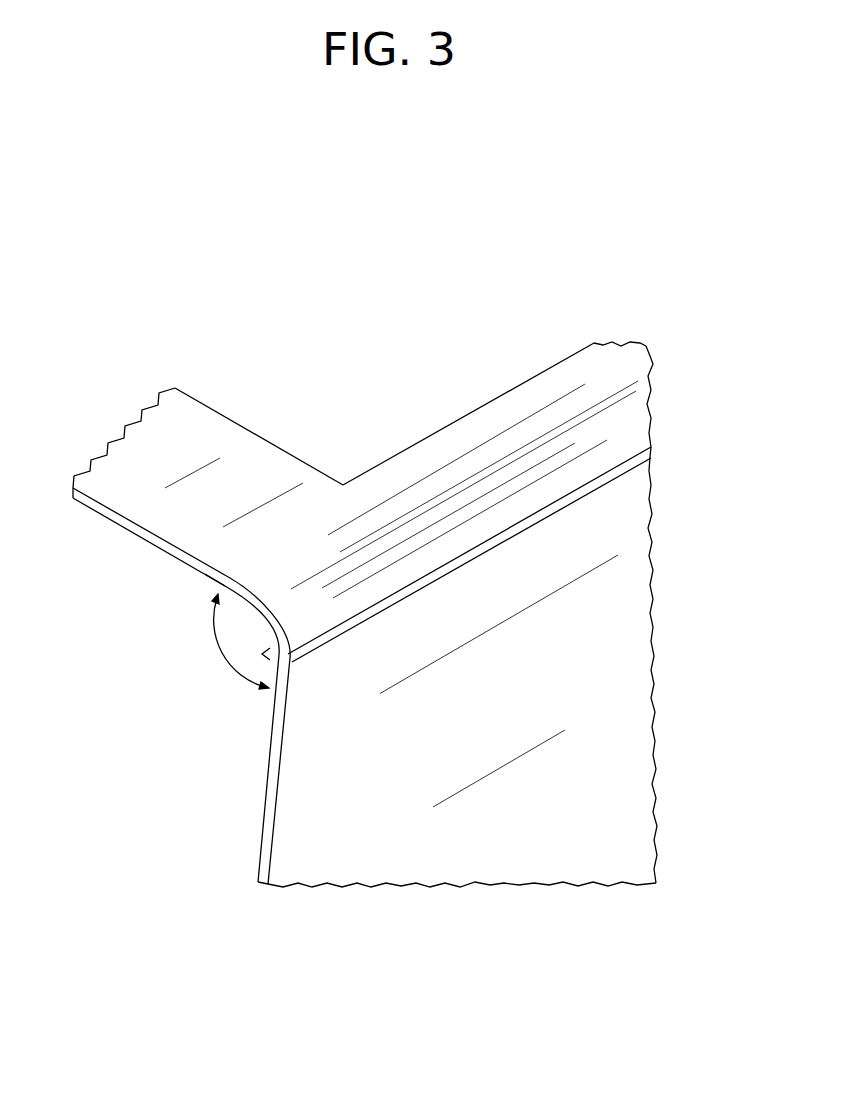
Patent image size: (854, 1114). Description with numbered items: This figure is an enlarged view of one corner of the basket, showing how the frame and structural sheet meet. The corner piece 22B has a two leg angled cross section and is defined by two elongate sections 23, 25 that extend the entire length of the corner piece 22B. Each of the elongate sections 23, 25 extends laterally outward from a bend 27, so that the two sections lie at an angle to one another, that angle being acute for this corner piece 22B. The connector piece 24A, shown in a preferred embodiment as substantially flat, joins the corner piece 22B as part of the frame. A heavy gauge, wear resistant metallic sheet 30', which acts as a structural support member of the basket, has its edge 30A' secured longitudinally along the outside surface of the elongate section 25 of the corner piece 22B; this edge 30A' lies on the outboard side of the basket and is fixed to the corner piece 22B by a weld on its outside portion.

The corner piece 22B is at (623, 353).
The connector piece 24A is at (220, 437).
The bend 27 is at (268, 631).
The elongate section 23 is at (213, 578).
The elongate section 25 is at (262, 654).
The edge 30A' is at (320, 771).
The heavy gauge metallic sheet 30' is at (490, 672).